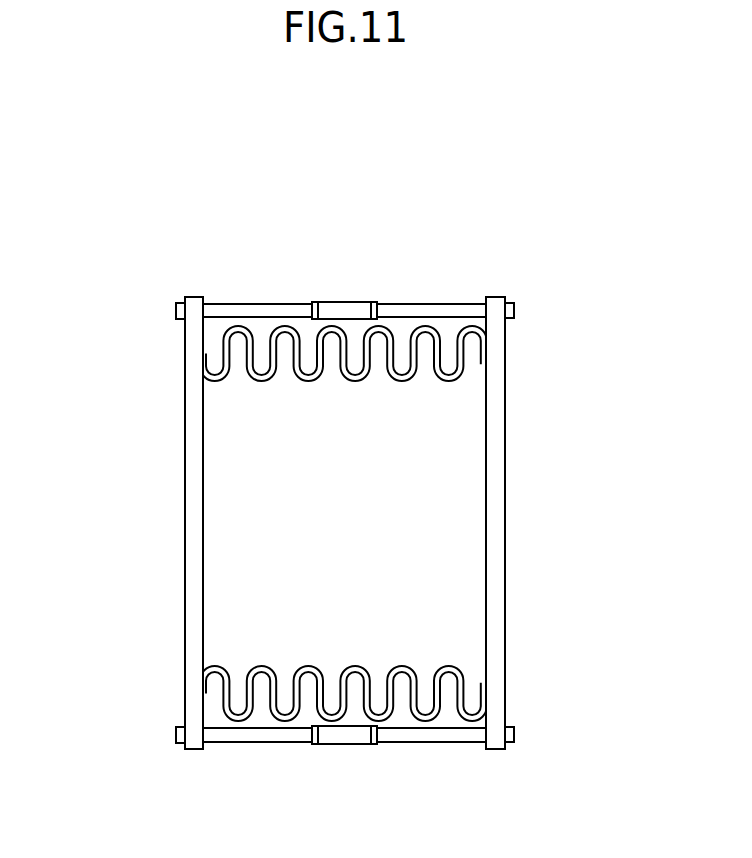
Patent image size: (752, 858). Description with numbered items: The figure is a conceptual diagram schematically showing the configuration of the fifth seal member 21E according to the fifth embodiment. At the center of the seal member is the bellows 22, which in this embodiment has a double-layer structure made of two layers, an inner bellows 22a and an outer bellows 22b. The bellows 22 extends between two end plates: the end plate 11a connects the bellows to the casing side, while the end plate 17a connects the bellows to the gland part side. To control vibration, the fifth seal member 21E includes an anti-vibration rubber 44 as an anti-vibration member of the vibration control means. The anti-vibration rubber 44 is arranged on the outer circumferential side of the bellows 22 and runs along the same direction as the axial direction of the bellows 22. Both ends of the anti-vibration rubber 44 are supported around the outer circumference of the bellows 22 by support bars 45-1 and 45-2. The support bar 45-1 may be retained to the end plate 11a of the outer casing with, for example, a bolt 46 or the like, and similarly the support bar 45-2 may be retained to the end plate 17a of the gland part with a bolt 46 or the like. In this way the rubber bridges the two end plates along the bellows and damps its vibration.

The fifth seal member 21E is at (392, 164).
The bellows 22 is at (262, 523).
The inner bellows 22a is at (256, 382).
The outer bellows 22b is at (224, 352).
The end plate 11a is at (185, 612).
The end plate 17a is at (505, 624).
The anti-vibration rubber 44 is at (335, 303).
The support bar 45-1 is at (247, 303).
The support bar 45-2 is at (442, 303).
The bolt 46 is at (177, 320).